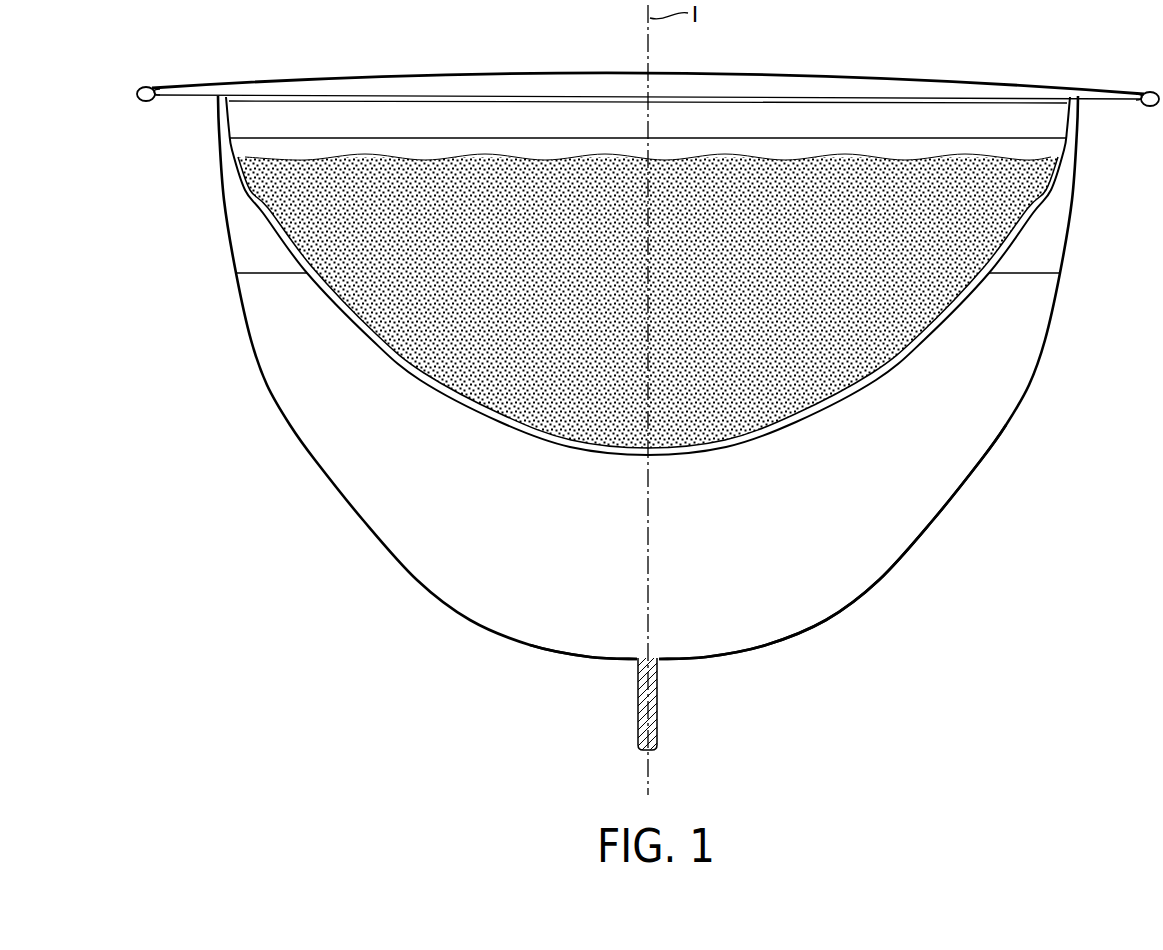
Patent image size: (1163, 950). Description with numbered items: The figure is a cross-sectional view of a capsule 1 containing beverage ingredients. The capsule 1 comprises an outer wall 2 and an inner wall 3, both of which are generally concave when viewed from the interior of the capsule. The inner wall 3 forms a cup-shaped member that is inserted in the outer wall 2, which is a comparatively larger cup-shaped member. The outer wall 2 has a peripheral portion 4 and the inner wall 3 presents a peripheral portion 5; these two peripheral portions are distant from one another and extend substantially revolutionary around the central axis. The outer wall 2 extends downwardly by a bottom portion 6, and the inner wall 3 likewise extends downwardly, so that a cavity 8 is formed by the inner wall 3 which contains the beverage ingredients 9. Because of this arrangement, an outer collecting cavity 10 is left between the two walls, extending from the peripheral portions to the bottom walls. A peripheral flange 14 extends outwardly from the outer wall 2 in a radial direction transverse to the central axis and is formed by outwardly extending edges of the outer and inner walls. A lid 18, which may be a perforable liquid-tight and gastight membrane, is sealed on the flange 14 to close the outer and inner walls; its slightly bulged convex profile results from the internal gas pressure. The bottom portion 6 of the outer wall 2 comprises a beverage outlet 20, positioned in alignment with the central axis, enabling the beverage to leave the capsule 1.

The capsule 1 is at (1092, 423).
The outer wall 2 is at (1062, 338).
The inner wall 3 is at (993, 289).
The peripheral portion 4 is at (1085, 105).
The peripheral portion 5 is at (259, 216).
The bottom portion 6 is at (776, 647).
The cavity 8 is at (421, 145).
The beverage ingredients 9 is at (420, 350).
The outer collecting cavity 10 is at (890, 515).
The peripheral flange 14 is at (137, 81).
The lid 18 is at (832, 74).
The beverage outlet 20 is at (659, 715).